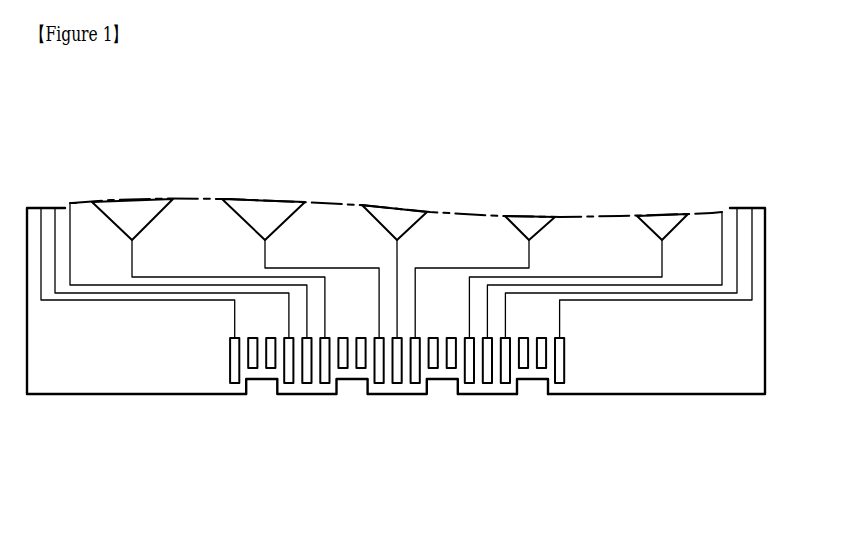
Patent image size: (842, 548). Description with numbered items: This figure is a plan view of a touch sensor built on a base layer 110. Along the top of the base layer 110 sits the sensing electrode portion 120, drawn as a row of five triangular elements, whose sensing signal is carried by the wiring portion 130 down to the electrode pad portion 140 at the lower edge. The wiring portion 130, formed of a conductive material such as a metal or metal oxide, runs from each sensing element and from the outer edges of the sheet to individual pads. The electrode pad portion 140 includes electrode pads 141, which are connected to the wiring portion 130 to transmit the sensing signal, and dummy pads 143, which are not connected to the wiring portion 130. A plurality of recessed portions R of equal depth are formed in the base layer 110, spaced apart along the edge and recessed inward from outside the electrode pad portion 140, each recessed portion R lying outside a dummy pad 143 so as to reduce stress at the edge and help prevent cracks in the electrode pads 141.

The base layer 110 is at (119, 394).
The sensing electrode portion 120 is at (398, 213).
The wiring portion 130 is at (753, 248).
The electrode pad portion 140 is at (397, 434).
The electrode pad 141 is at (306, 378).
The dummy pad 143 is at (360, 367).
The recessed portion R is at (538, 388).